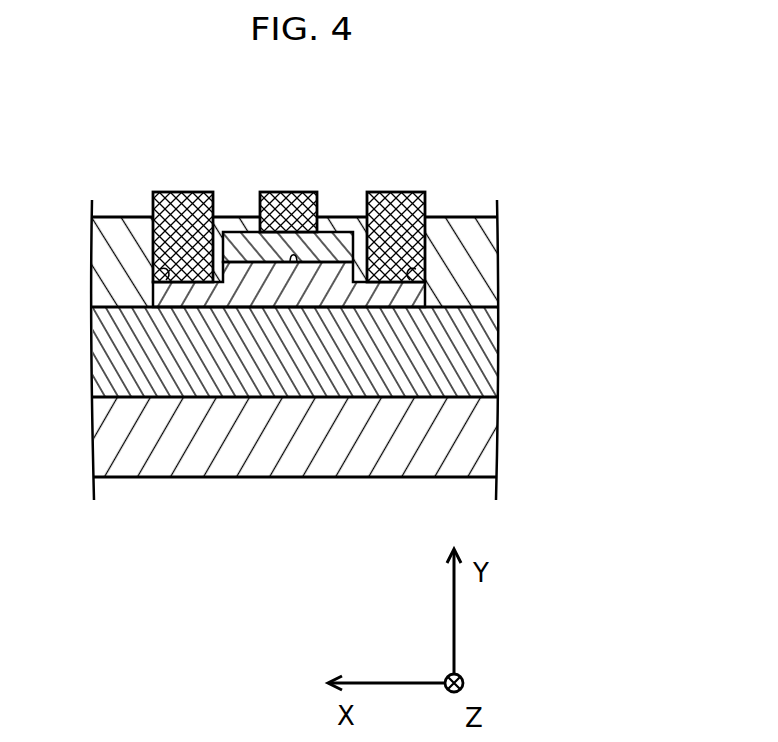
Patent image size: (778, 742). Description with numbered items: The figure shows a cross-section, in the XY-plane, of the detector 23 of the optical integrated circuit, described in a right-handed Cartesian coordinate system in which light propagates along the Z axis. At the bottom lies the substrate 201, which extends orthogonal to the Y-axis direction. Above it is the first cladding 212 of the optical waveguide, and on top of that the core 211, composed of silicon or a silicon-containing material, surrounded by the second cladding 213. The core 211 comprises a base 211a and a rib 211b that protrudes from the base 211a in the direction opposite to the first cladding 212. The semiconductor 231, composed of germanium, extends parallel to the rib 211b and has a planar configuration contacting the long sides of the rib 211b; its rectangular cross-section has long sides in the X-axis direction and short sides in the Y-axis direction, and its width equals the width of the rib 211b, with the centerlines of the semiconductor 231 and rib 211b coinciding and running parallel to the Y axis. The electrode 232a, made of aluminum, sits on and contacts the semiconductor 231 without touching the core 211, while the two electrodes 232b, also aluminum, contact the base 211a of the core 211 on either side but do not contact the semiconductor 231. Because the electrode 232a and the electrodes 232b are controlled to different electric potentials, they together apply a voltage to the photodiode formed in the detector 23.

The detector 23 is at (437, 184).
The substrate 201 is at (129, 478).
The first cladding 212 is at (182, 398).
The second cladding 213 is at (113, 217).
The core 211 is at (332, 263).
The base 211a is at (160, 269).
The rib 211b is at (295, 263).
The semiconductor 231 is at (239, 228).
The electrode 232a is at (291, 192).
The electrodes 232b is at (172, 192).